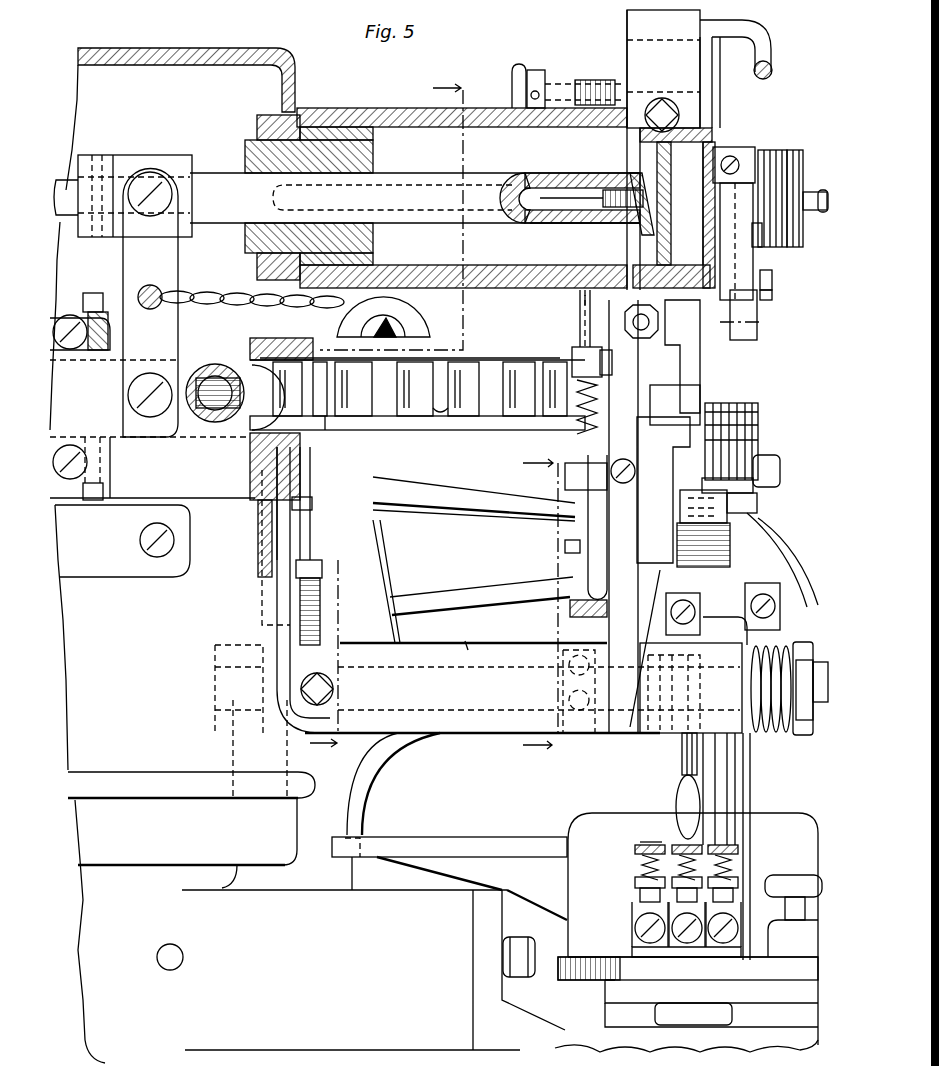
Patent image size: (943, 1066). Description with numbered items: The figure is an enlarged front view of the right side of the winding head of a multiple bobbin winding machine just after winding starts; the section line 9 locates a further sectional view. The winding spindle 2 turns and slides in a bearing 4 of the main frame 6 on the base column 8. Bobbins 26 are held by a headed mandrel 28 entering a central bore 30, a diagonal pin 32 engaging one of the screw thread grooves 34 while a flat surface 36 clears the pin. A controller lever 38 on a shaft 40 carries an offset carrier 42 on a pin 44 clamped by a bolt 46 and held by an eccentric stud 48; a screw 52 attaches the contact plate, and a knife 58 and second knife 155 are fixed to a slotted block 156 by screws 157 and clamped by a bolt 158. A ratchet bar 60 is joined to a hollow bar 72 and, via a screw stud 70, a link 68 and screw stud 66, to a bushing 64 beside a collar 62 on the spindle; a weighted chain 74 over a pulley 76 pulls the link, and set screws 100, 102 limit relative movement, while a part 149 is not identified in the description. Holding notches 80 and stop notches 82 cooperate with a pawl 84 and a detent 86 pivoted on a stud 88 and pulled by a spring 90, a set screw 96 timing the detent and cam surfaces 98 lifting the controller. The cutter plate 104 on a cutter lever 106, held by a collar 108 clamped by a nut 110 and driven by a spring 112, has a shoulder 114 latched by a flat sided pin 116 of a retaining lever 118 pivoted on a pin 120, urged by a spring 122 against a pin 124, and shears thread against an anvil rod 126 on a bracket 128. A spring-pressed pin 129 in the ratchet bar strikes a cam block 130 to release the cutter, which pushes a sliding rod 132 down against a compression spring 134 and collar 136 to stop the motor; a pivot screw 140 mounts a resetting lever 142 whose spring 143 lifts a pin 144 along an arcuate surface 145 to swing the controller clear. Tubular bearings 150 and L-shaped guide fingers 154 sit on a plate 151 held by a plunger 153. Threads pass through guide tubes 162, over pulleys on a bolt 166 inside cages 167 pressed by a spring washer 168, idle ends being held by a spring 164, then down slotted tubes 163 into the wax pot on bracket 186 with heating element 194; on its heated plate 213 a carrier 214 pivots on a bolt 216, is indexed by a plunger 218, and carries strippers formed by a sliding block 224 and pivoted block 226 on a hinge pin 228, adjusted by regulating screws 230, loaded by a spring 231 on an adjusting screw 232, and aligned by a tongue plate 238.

The winding spindle 2 is at (419, 183).
The bearing 4 is at (372, 162).
The main frame 6 is at (337, 116).
The base column 8 is at (285, 561).
The section line 9 is at (540, 610).
The bobbins 26 is at (791, 150).
The headed mandrel 28 is at (603, 198).
The central bore 30 is at (526, 162).
The pin 32 is at (615, 225).
The screw thread grooves 34 is at (632, 176).
The flat surface 36 is at (810, 192).
The lever 38 is at (617, 618).
The shaft 40 is at (490, 712).
The offset carrier 42 is at (694, 345).
The pin 44 is at (600, 323).
The bolt 46 is at (658, 330).
The stud 48 is at (682, 400).
The screw 52 is at (731, 155).
The knife 58 is at (758, 152).
The ratchet bar 60 is at (248, 432).
The collar 62 is at (105, 168).
The bushing 64 is at (170, 162).
The screw stud 66 is at (153, 218).
The link 68 is at (172, 267).
The screw stud 70 is at (148, 372).
The hollow bar 72 is at (182, 438).
The chain 74 is at (222, 297).
The pulley 76 is at (383, 317).
The holding notches 80 is at (440, 420).
The stop notches 82 is at (440, 362).
The pawl 84 is at (340, 433).
The detent 86 is at (296, 571).
The stud 88 is at (300, 616).
The spring 90 is at (292, 504).
The set screw 96 is at (372, 458).
The cam surface 98 is at (426, 410).
The set screw 100 is at (93, 298).
The set screw 102 is at (106, 491).
The sharp-edged plate 104 is at (760, 479).
The cutter lever 106 is at (746, 493).
The collar 108 is at (802, 736).
The nut 110 is at (820, 702).
The spring 112 is at (768, 734).
The shoulder 114 is at (748, 506).
The flat sided pin 116 is at (730, 520).
The cutter retaining lever 118 is at (580, 479).
The pin 120 is at (577, 482).
The spring 122 is at (570, 590).
The pin 124 is at (565, 553).
The anvil rod 126 is at (745, 550).
The horizontal bracket 128 is at (473, 581).
The spring-pressed pin 129 is at (577, 374).
The cam block 130 is at (712, 412).
The vertically sliding rod 132 is at (585, 303).
The compression spring 134 is at (578, 426).
The collar 136 is at (600, 350).
The pivot screw 140 is at (693, 675).
The U-shaped resetting lever 142 is at (680, 782).
The spring 143 is at (682, 746).
The pin 144 is at (609, 720).
The arcuate surface 145 is at (645, 600).
The housing wall 149 is at (227, 360).
The bearings 150 is at (722, 128).
The plate 151 is at (627, 28).
The spring-pressed plunger 153 is at (538, 84).
The L-shaped thread guide fingers 154 is at (765, 54).
The second knife 155 is at (772, 282).
The vertically slotted block 156 is at (757, 325).
The screws 157 is at (762, 250).
The bolt 158 is at (772, 298).
The converging slotted guide tubes 162 is at (780, 608).
The slotted tubes 163 is at (750, 830).
The spring 164 is at (760, 540).
The bolt 166 is at (757, 441).
The split thread retaining cage 167 is at (755, 410).
The spring washer 168 is at (757, 426).
The bracket 186 is at (449, 891).
The hollow plate 194 is at (658, 1004).
The plate 213 is at (711, 992).
The carrier 214 is at (693, 969).
The vertical bolt 216 is at (688, 969).
The vertical spring-pressed plunger 218 is at (695, 929).
The sliding block 224 is at (640, 914).
The pivoted block 226 is at (642, 866).
The hinge pin 228 is at (635, 883).
The regulating screws 230 is at (642, 940).
The spring 231 is at (635, 850).
The adjusting screw 232 is at (652, 843).
The tongue plate 238 is at (640, 905).